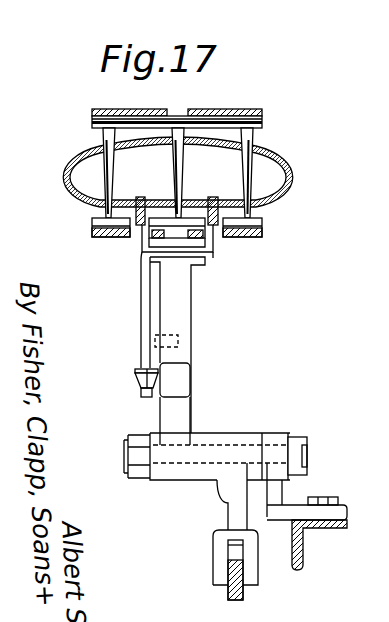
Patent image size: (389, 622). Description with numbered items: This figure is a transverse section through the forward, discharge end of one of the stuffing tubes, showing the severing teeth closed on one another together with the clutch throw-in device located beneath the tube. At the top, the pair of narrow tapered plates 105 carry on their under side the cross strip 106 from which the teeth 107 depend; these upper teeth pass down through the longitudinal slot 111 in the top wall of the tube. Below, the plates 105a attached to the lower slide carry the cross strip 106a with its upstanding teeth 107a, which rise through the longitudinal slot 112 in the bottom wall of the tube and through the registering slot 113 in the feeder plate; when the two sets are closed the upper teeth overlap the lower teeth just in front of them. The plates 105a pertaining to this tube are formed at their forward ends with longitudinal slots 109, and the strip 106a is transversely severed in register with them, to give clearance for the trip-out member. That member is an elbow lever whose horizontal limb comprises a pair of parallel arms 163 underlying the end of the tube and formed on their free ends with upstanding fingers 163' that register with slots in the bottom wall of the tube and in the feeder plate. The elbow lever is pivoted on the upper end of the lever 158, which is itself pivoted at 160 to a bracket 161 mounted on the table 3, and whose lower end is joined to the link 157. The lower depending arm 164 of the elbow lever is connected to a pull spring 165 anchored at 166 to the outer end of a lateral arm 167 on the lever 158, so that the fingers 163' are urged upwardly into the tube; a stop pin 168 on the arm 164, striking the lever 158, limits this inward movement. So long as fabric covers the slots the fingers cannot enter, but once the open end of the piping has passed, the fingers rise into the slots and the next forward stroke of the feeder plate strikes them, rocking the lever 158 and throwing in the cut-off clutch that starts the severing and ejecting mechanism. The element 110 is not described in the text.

The tapered plates 105 is at (165, 108).
The cross strip 106 is at (224, 125).
The teeth 107 is at (103, 136).
The longitudinal slot 111 is at (100, 148).
The upstanding fingers 163' is at (180, 189).
The band portions 110 is at (131, 200).
The slot 113 is at (95, 192).
The upstanding teeth 107a is at (258, 191).
The longitudinal slot 112 is at (97, 212).
The cross strip 106a is at (263, 236).
The plates 105a is at (100, 230).
The longitudinal slots 109 is at (134, 227).
The parallel arms 163 is at (175, 260).
The depending arm 164 is at (140, 309).
The stop pin 168 is at (155, 340).
The anchor 166 is at (135, 381).
The pull spring 165 is at (141, 394).
The lateral arm 167 is at (183, 373).
The lever 158 is at (222, 440).
The pivot 160 is at (275, 443).
The bracket 161 is at (273, 492).
The table 3 is at (303, 556).
The link 157 is at (228, 594).